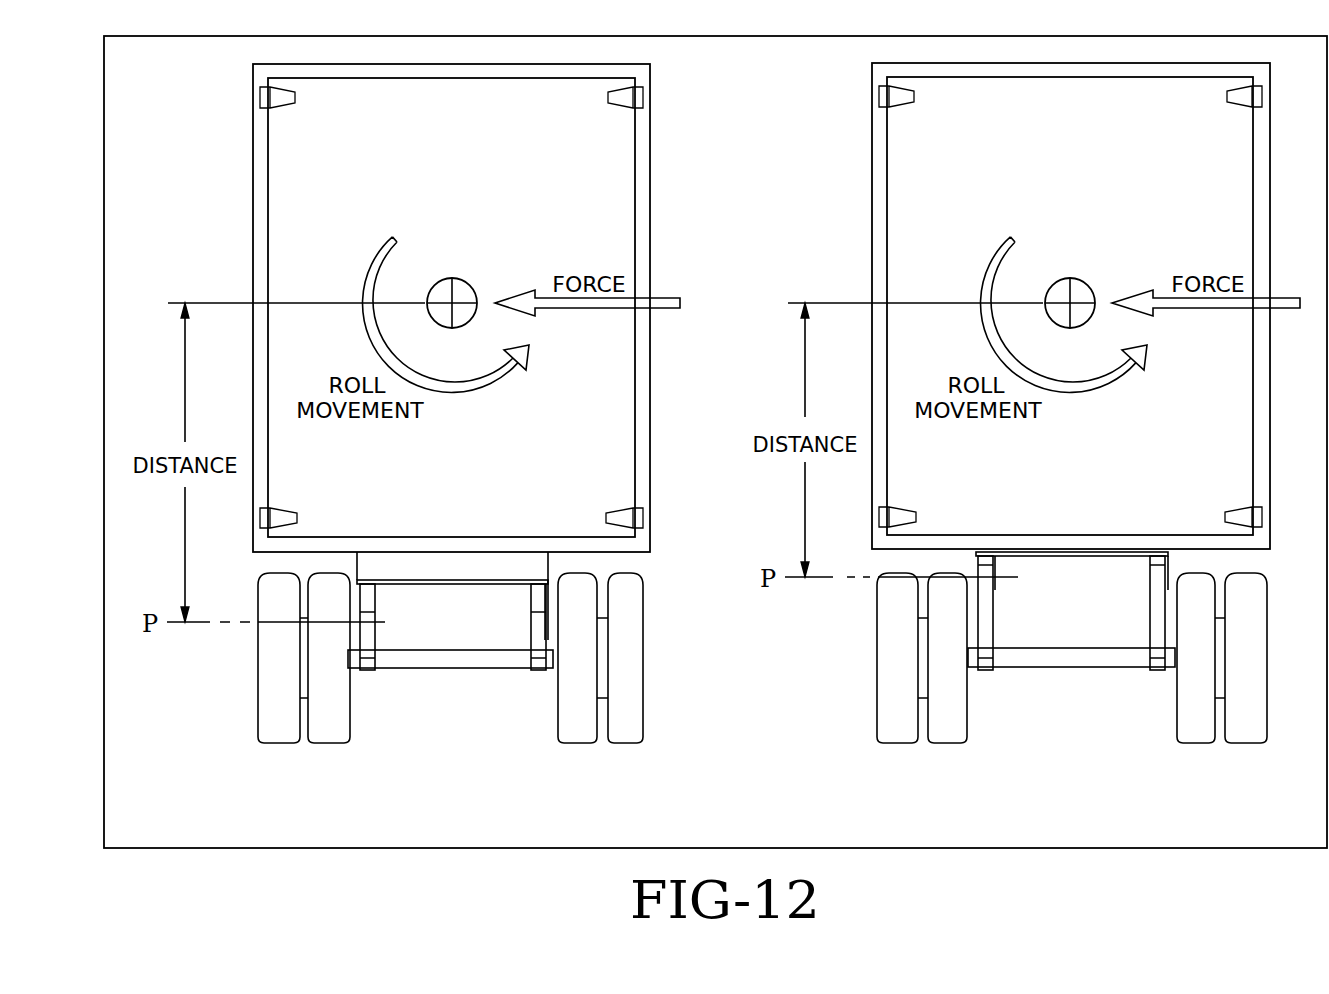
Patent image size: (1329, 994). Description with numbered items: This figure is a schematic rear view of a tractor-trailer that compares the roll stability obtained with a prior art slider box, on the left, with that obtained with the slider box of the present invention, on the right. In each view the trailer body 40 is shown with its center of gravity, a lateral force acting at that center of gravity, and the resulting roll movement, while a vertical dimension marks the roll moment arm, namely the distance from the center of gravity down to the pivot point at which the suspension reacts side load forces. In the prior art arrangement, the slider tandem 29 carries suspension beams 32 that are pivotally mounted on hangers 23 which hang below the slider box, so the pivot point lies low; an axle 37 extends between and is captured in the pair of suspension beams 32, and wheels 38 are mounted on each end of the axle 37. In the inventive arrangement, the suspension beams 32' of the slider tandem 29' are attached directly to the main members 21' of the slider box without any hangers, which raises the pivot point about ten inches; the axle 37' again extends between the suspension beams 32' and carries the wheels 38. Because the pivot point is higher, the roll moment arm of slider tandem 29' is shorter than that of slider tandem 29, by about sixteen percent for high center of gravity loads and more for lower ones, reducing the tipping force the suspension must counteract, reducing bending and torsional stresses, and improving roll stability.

The trailer body 40 is at (253, 205).
The hanger 23 is at (383, 585).
The suspension beam 32 is at (453, 655).
The axle 37 is at (450, 700).
The slider tandem 29 is at (450, 661).
The wheels 38 is at (268, 743).
The main member 21' is at (1071, 498).
The suspension beam 32' is at (1071, 613).
The axle 37' is at (1071, 698).
The slider tandem 29' is at (1071, 640).